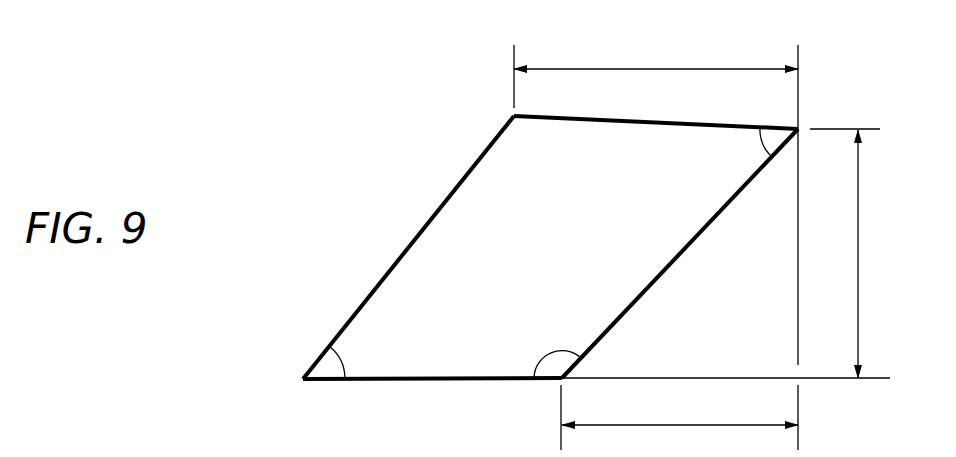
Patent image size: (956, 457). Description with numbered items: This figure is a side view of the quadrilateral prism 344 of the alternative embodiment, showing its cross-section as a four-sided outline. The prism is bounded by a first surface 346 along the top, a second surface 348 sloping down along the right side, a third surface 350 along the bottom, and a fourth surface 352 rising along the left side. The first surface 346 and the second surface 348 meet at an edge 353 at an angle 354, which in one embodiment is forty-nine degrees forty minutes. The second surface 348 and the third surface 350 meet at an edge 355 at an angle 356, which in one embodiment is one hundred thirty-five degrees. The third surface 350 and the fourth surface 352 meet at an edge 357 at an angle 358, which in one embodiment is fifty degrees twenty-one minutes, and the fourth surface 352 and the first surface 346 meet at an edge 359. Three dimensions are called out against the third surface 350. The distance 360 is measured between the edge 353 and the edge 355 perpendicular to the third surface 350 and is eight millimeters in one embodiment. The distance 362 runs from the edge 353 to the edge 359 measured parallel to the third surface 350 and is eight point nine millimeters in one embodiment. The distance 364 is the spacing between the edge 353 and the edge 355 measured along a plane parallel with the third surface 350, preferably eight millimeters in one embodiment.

The quadrilateral prism 344 is at (304, 124).
The surface S13 346 is at (710, 124).
The surface S14 348 is at (720, 212).
The surface S15 350 is at (385, 381).
The surface S16 352 is at (436, 213).
The edge 353 is at (800, 128).
The angle 354 is at (764, 150).
The edge 355 is at (563, 381).
The angle 356 is at (546, 352).
The edge 357 is at (302, 381).
The angle 358 is at (345, 360).
The edge 359 is at (513, 115).
The distance 360 is at (859, 250).
The distance 362 is at (640, 68).
The distance 364 is at (660, 426).